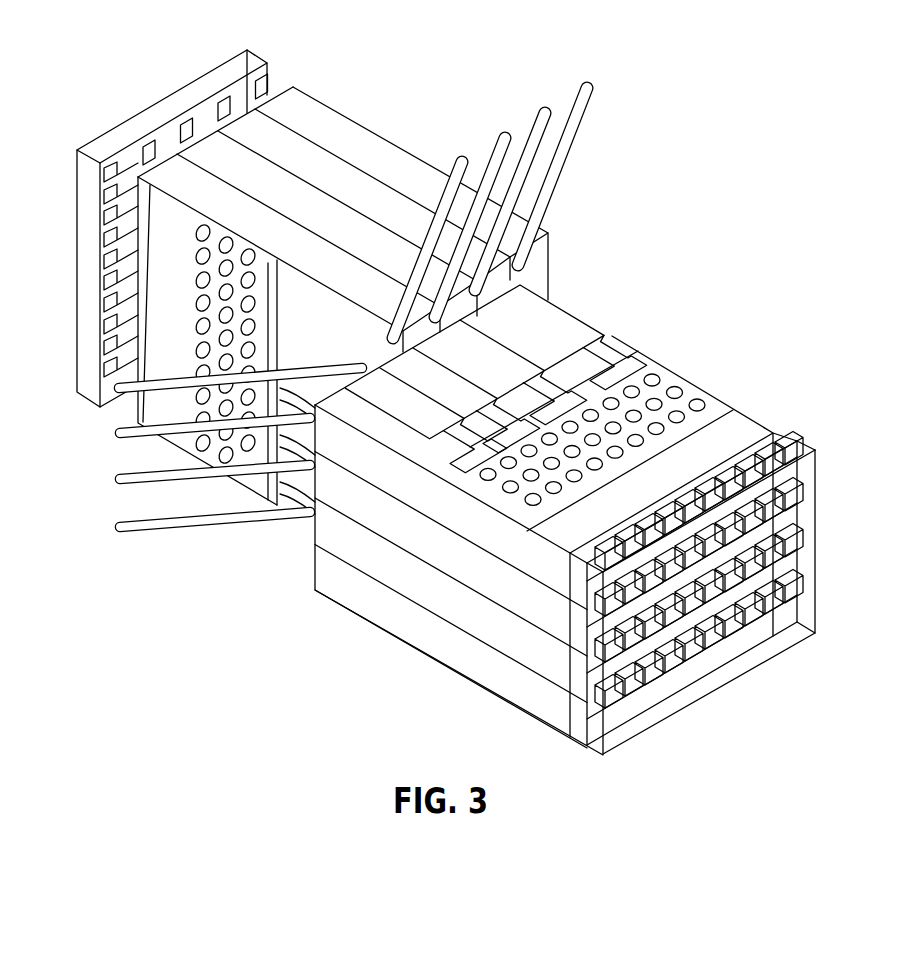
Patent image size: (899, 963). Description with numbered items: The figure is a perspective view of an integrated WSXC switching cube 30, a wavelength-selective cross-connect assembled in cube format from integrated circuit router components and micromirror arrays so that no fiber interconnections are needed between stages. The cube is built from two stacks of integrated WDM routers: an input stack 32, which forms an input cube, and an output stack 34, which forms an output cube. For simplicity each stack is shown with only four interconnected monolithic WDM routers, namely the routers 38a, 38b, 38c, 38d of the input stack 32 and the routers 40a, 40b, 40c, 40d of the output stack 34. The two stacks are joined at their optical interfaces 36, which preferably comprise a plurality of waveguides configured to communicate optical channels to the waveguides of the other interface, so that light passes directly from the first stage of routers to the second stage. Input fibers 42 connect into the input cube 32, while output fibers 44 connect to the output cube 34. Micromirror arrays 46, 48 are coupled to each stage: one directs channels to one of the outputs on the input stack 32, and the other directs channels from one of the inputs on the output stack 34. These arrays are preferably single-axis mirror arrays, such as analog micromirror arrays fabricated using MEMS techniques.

The integrated WSXC switching cube 30 is at (757, 115).
The input stack 32 is at (745, 358).
The output stack 34 is at (368, 68).
The optical interfaces 36 is at (457, 315).
The monolithic WDM router 38a is at (545, 567).
The monolithic WDM router 38b is at (485, 585).
The monolithic WDM router 38c is at (443, 598).
The monolithic WDM router 38d is at (372, 598).
The monolithic WDM router 40a is at (297, 107).
The monolithic WDM router 40b is at (248, 130).
The monolithic WDM router 40c is at (218, 162).
The monolithic WDM router 40d is at (177, 185).
The input fibers 42 is at (60, 380).
The output fibers 44 is at (596, 52).
The micromirror array 46 is at (817, 560).
The micromirror array 48 is at (77, 267).